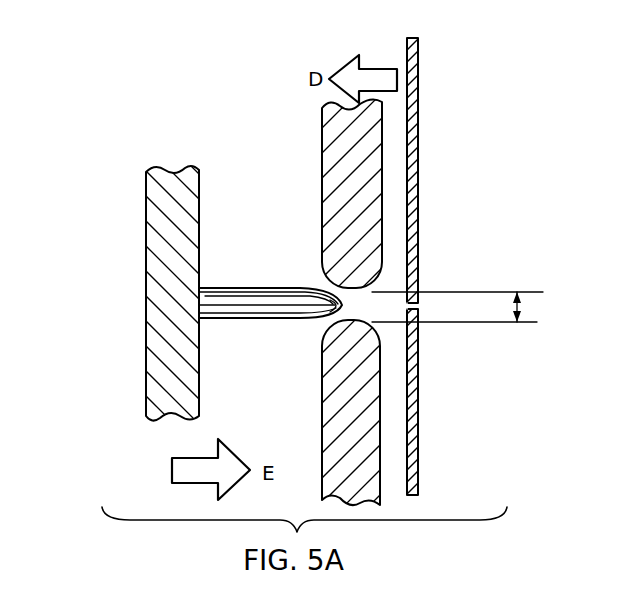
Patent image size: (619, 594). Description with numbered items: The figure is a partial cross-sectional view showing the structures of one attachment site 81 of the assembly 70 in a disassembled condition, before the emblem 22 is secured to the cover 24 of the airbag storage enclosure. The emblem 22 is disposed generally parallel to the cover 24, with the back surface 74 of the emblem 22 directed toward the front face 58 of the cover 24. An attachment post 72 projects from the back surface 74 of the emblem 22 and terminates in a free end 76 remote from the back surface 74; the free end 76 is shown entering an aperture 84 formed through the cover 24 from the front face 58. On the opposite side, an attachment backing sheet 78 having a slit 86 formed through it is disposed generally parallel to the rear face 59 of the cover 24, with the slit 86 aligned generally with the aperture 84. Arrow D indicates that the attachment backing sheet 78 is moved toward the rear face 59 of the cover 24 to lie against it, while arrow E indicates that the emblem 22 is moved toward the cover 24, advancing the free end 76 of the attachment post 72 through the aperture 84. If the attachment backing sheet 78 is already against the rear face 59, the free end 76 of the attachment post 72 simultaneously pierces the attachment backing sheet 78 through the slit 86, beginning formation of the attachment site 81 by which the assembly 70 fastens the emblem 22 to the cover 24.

The emblem 22 is at (170, 160).
The back surface 74 is at (190, 230).
The attachment site 81 is at (130, 305).
The attachment post 72 is at (238, 272).
The free end 76 is at (326, 314).
The cover 24 is at (312, 135).
The front face 58 is at (322, 178).
The rear face 59 is at (382, 148).
The attachment backing sheet 78 is at (430, 460).
The slit 86 is at (430, 305).
The aperture 84 is at (461, 307).
The assembly 70 is at (507, 184).